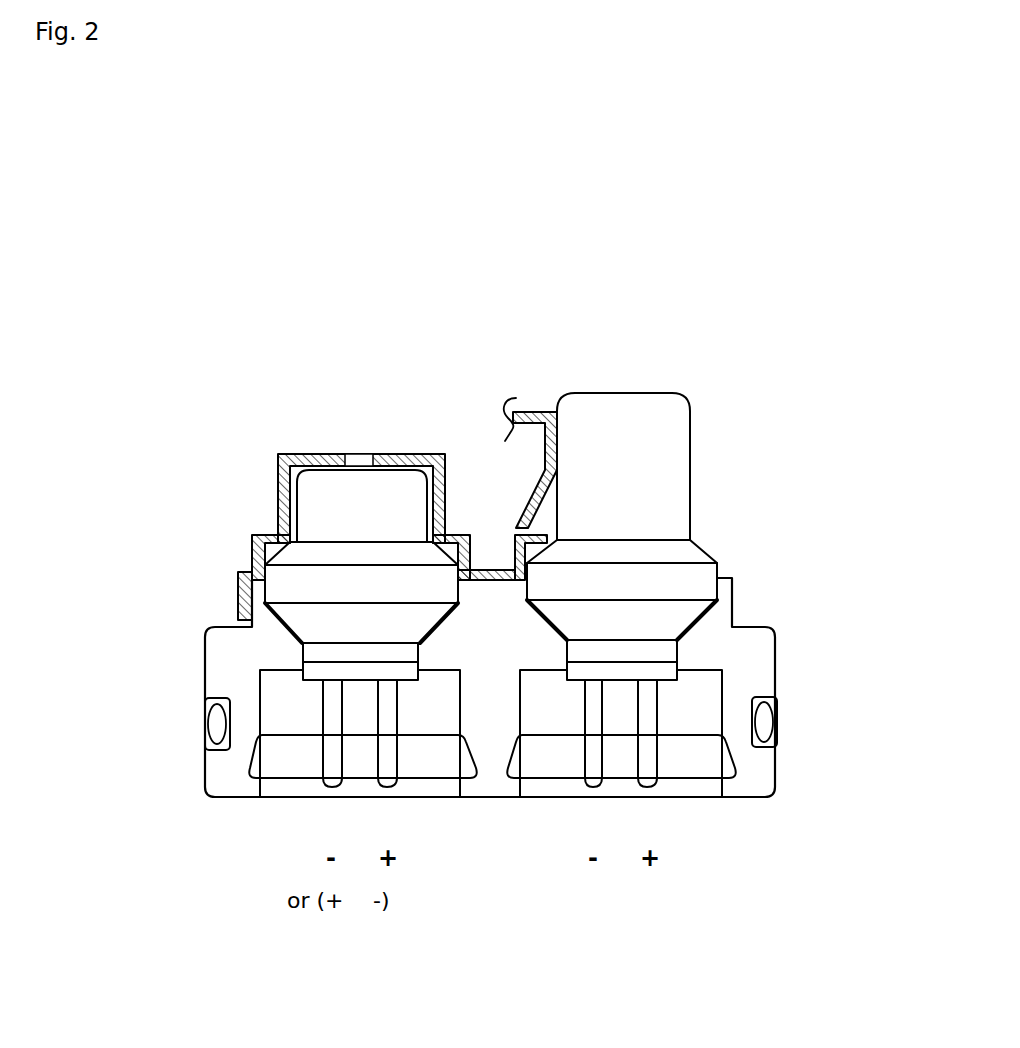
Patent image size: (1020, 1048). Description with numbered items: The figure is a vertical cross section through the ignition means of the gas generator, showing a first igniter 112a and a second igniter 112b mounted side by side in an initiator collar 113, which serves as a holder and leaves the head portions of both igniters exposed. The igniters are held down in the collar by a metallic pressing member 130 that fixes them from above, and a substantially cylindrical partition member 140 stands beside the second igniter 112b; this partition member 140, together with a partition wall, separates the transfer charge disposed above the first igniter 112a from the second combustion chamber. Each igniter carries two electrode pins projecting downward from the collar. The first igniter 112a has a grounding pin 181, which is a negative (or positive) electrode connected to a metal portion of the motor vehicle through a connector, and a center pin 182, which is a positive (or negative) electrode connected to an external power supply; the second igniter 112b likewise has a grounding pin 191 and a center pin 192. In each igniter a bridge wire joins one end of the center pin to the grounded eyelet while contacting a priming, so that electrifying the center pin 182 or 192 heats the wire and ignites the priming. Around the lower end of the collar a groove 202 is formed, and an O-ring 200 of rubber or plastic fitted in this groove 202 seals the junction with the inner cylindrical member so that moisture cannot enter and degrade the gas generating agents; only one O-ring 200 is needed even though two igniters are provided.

The initiator collar 113 is at (750, 668).
The metallic pressing member 130 is at (280, 455).
The partition member 140 is at (535, 413).
The first igniter 112a is at (297, 613).
The second igniter 112b is at (658, 493).
The O-ring 200 is at (767, 733).
The groove 202 is at (775, 710).
The grounding pin 181 is at (328, 762).
The center pin 182 is at (390, 763).
The grounding pin 191 is at (590, 760).
The center pin 192 is at (653, 763).